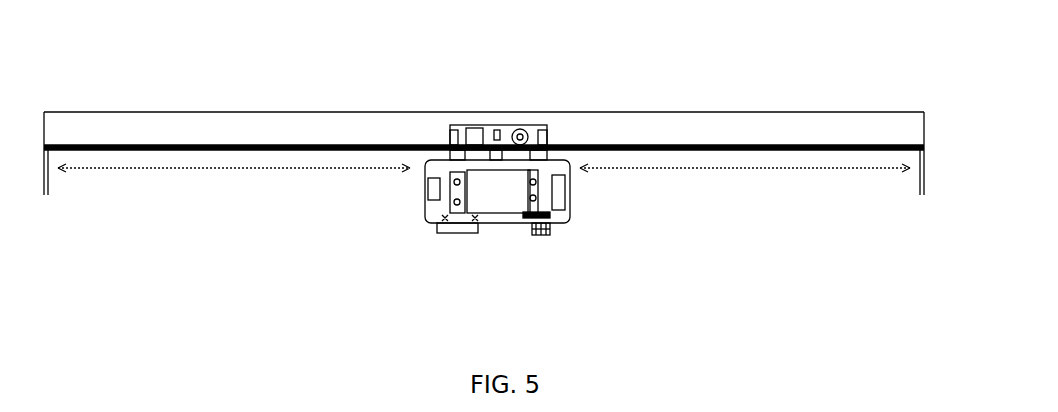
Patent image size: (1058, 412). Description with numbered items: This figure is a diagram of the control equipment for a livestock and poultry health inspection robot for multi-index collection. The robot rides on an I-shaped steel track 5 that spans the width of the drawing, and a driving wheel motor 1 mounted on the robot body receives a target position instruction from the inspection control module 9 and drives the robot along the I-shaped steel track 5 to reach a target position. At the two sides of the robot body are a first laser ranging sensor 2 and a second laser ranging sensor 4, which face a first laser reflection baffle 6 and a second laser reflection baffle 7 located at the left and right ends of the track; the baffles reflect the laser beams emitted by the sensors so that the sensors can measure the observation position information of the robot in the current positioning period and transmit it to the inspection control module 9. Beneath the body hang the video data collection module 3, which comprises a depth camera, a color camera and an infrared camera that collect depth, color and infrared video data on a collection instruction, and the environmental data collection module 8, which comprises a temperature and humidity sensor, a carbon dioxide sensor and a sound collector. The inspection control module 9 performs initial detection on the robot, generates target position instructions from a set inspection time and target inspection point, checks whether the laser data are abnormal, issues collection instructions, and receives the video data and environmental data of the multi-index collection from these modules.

The driving wheel motor 1 is at (525, 138).
The first laser ranging sensor 2 is at (423, 165).
The video data collection module 3 is at (457, 233).
The second laser ranging sensor 4 is at (570, 168).
The I-shaped steel track 5 is at (238, 135).
The first laser reflection baffle 6 is at (48, 173).
The second laser reflection baffle 7 is at (925, 170).
The environmental data collection module 8 is at (537, 233).
The inspection control module 9 is at (557, 235).